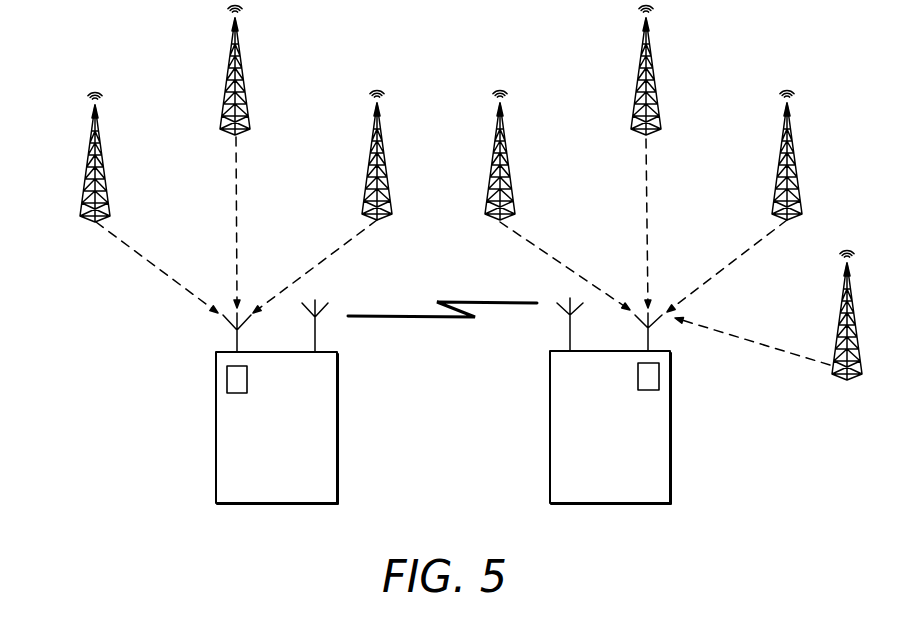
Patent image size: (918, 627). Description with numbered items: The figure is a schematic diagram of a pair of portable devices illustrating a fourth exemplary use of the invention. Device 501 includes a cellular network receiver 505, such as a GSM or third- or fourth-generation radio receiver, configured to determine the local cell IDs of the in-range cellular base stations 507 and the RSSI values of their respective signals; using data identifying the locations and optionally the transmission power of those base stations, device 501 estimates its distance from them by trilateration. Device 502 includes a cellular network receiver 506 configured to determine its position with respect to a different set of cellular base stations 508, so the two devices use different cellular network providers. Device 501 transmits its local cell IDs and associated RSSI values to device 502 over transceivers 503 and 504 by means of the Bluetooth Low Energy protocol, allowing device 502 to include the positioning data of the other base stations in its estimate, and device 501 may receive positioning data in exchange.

The device 501 is at (337, 435).
The device 502 is at (550, 435).
The transceiver 503 is at (317, 330).
The transceiver 504 is at (570, 328).
The cellular network receiver 505 is at (227, 377).
The cellular network receiver 506 is at (659, 375).
The cellular base stations 507 is at (87, 163).
The cellular base stations 508 is at (492, 160).